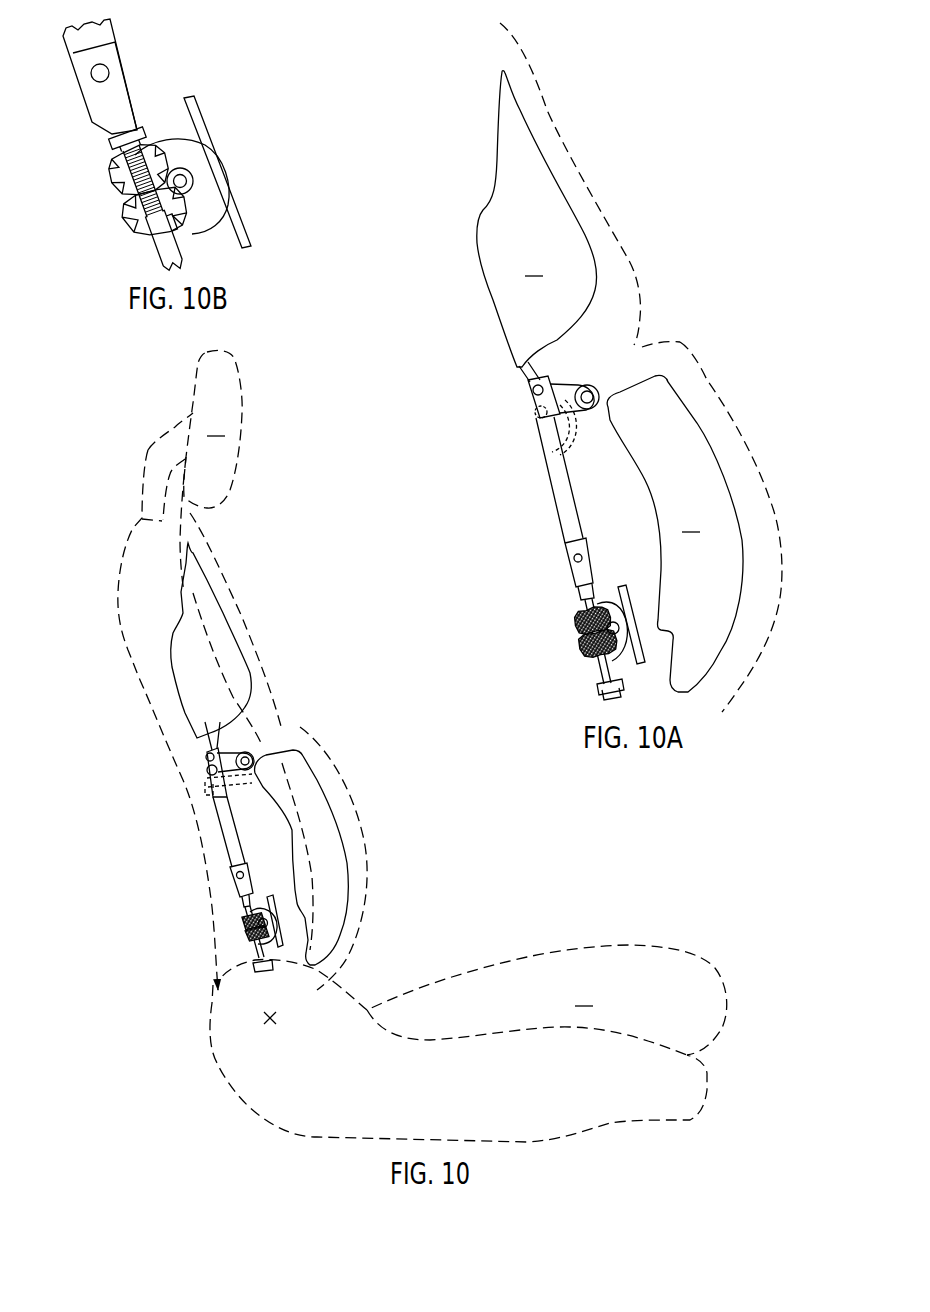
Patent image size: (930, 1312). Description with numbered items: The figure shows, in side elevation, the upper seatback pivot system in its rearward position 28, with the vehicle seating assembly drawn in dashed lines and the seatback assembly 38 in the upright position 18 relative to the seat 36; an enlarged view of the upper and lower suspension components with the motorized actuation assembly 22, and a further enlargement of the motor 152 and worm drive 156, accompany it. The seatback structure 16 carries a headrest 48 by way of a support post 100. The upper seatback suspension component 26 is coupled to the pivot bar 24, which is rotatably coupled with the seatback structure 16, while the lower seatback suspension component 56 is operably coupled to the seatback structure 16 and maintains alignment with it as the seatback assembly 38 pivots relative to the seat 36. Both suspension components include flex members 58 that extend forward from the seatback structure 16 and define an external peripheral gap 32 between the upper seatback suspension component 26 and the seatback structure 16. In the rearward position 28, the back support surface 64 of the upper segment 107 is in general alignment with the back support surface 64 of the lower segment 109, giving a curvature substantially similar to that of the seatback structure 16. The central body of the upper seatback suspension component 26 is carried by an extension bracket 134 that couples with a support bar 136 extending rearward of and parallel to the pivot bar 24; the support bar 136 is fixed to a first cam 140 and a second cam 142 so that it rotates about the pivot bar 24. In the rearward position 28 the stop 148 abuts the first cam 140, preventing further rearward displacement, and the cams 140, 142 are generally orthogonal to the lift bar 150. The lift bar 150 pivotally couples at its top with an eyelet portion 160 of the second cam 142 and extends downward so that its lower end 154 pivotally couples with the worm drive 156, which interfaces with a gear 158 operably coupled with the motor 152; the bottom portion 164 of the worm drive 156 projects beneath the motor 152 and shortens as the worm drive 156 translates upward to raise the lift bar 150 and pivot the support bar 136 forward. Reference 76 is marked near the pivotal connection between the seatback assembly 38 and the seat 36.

In FIG. 10, the seatback structure 16 is at (146, 587).
In FIG. 10A, the upright position 18 is at (740, 370).
In FIG. 10, the upright position 18 is at (362, 672).
In FIG. 10A, the motorized actuation assembly 22 is at (546, 606).
In FIG. 10, the motorized actuation assembly 22 is at (262, 840).
In FIG. 10A, the pivot bar 24 is at (583, 384).
In FIG. 10, the pivot bar 24 is at (252, 756).
In FIG. 10A, the upper seatback suspension component 26 is at (565, 156).
In FIG. 10, the upper seatback suspension component 26 is at (199, 603).
In FIG. 10A, the rearward position 28 is at (689, 178).
In FIG. 10, the rearward position 28 is at (258, 515).
In FIG. 10, the external peripheral gap 32 is at (210, 641).
In FIG. 10, the seat 36 is at (468, 1043).
In FIG. 10, the seatback assembly 38 is at (146, 791).
In FIG. 10, the headrest 48 is at (213, 429).
In FIG. 10A, the lower seatback suspension component 56 is at (750, 491).
In FIG. 10, the lower seatback suspension component 56 is at (352, 840).
In FIG. 10A, the flex members 58 is at (612, 393).
In FIG. 10, the flex members 58 is at (213, 693).
In FIG. 10A, the back support surface 64 is at (536, 68).
In FIG. 10, the back support surface 64 is at (208, 540).
In FIG. 10, the pivot axis 76 is at (267, 1016).
In FIG. 10, the support post 100 is at (150, 450).
In FIG. 10A, the upper segment 107 is at (636, 242).
In FIG. 10, the upper segment 107 is at (265, 640).
In FIG. 10A, the lower segment 109 is at (752, 410).
In FIG. 10, the lower segment 109 is at (360, 797).
In FIG. 10A, the extension bracket 134 is at (528, 381).
In FIG. 10, the extension bracket 134 is at (198, 744).
In FIG. 10A, the support bar 136 is at (535, 413).
In FIG. 10, the support bar 136 is at (206, 762).
In FIG. 10A, the first cam 140 is at (519, 421).
In FIG. 10, the first cam 140 is at (277, 735).
In FIG. 10A, the second cam 142 is at (560, 416).
In FIG. 10, the second cam 142 is at (243, 732).
In FIG. 10, the stop 148 is at (203, 786).
In FIG. 10A, the lift bar 150 is at (556, 474).
In FIG. 10, the lift bar 150 is at (222, 815).
In FIG. 10B, the motor 152 is at (193, 157).
In FIG. 10A, the motor 152 is at (610, 612).
In FIG. 10, the motor 152 is at (268, 915).
In FIG. 10B, the lower end 154 is at (98, 37).
In FIG. 10A, the lower end 154 is at (573, 540).
In FIG. 10, the lower end 154 is at (232, 858).
In FIG. 10B, the worm drive 156 is at (122, 153).
In FIG. 10A, the worm drive 156 is at (583, 617).
In FIG. 10, the worm drive 156 is at (245, 915).
In FIG. 10B, the gear 158 is at (138, 220).
In FIG. 10A, the gear 158 is at (592, 639).
In FIG. 10, the gear 158 is at (248, 935).
In FIG. 10A, the eyelet portion 160 is at (533, 389).
In FIG. 10, the eyelet portion 160 is at (205, 758).
In FIG. 10A, the bottom portion 164 is at (603, 672).